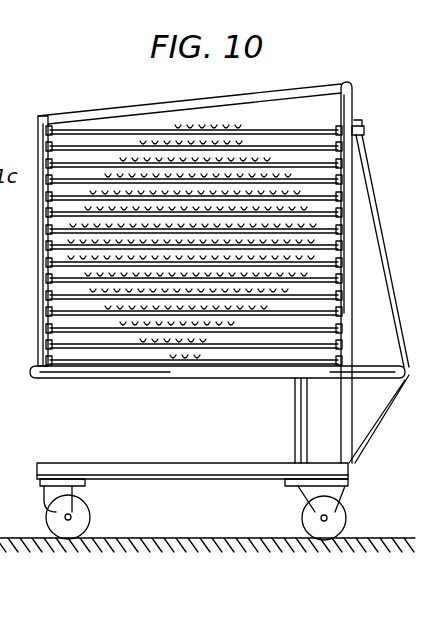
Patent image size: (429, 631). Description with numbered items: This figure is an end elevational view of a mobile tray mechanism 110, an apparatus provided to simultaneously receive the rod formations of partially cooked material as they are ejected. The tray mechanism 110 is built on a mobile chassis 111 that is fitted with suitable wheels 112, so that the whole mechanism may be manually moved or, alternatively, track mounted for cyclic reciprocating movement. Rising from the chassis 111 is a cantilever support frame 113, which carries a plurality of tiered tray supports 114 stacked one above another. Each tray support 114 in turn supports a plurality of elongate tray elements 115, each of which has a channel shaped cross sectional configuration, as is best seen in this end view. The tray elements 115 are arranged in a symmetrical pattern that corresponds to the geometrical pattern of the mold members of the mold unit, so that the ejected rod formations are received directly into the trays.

The mobile tray mechanism 110 is at (122, 106).
The mobile chassis 111 is at (167, 470).
The wheels 112 is at (305, 515).
The cantilever support frame 113 is at (163, 376).
The tiered tray supports 114 is at (298, 162).
The tray elements 115 is at (258, 158).